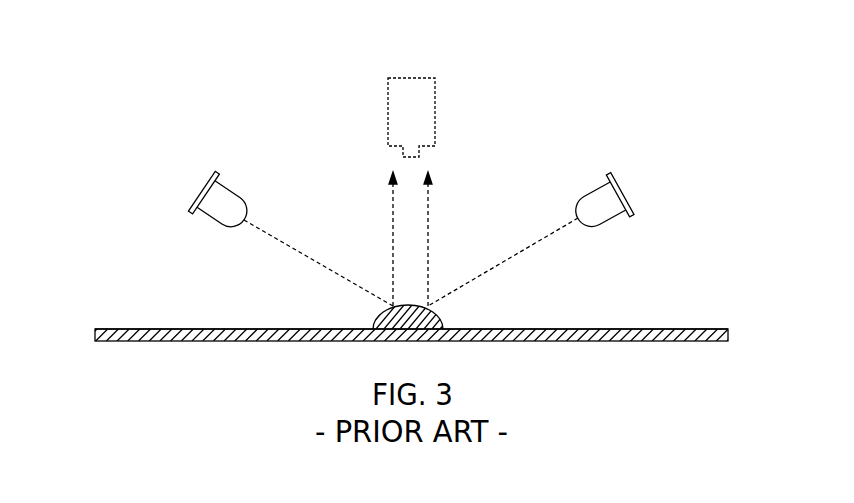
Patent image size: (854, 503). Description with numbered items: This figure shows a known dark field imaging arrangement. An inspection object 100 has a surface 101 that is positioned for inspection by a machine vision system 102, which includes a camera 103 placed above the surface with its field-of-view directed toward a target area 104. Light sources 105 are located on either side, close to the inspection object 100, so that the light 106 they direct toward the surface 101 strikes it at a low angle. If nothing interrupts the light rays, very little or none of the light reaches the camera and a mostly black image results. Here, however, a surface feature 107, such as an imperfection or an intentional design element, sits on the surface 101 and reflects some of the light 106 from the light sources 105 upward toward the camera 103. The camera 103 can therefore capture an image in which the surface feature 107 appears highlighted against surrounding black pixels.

The inspection object 100 is at (93, 335).
The surface 101 is at (155, 328).
The machine vision system 102 is at (489, 81).
The camera 103 is at (412, 78).
The target area 104 is at (417, 271).
The light sources 105 is at (206, 186).
The light 106 is at (567, 228).
The surface feature 107 is at (438, 318).